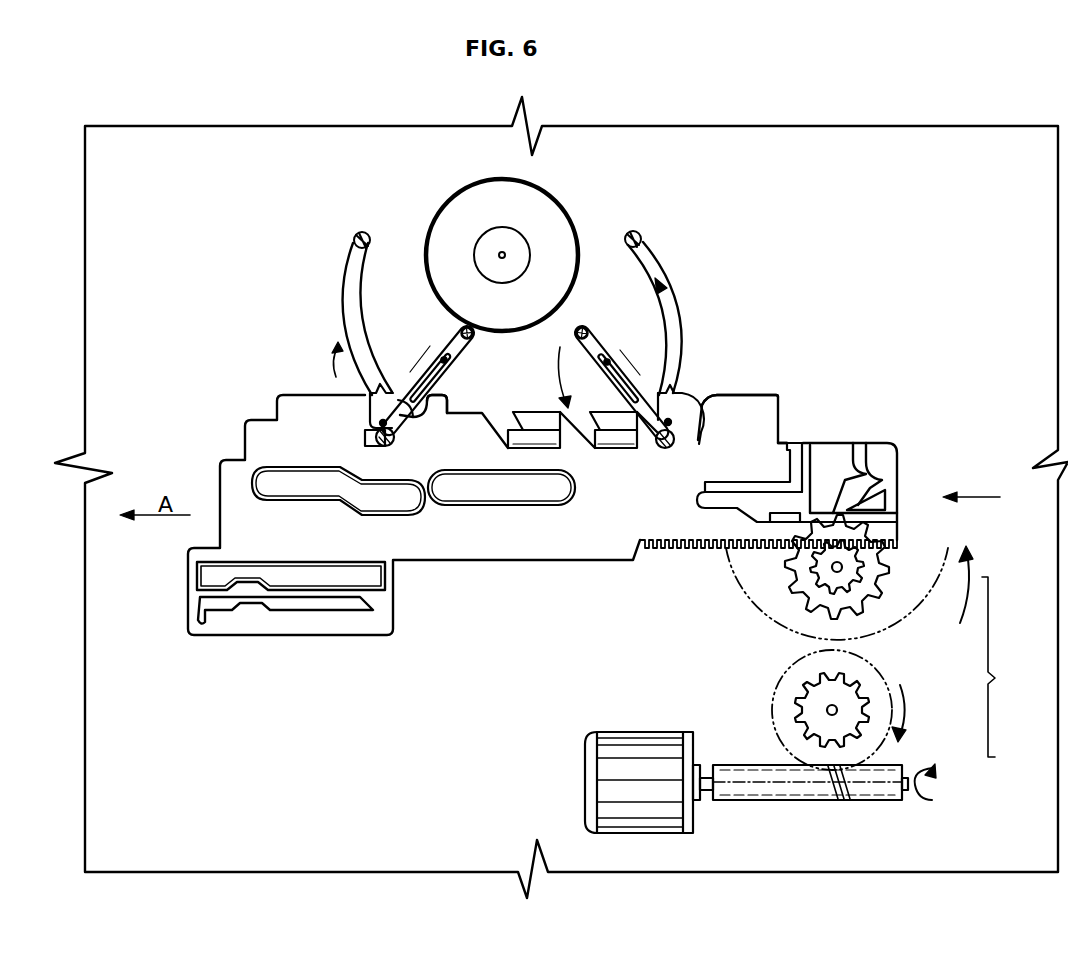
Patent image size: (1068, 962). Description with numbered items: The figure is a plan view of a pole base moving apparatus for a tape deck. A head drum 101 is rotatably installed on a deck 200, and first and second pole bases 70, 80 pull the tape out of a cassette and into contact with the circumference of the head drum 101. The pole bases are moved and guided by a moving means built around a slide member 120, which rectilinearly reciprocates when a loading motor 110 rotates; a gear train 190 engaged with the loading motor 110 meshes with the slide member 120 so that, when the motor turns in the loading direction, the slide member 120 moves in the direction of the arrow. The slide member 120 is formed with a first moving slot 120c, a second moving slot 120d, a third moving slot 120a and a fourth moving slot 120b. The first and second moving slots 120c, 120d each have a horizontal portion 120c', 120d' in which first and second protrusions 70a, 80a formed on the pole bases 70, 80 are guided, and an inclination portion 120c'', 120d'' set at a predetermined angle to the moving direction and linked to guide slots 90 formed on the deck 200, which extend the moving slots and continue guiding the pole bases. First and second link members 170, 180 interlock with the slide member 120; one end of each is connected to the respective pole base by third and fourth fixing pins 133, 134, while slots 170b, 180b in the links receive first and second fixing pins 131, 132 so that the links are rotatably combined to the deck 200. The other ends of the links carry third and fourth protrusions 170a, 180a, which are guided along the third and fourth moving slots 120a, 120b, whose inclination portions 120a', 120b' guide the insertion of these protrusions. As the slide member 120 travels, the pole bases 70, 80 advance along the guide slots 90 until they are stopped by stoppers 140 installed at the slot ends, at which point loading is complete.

The deck 200 is at (225, 148).
The head drum 101 is at (540, 212).
The guide slots 90 is at (352, 262).
The stoppers 140 is at (359, 232).
The first link member 170 is at (450, 380).
The third protrusion 170a is at (428, 270).
The slot of first link member 170b is at (395, 345).
The first fixing pin 131 is at (477, 347).
The third fixing pin 133 is at (378, 423).
The second link member 180 is at (638, 378).
The fourth protrusion 180a is at (585, 330).
The slot of second link member 180b is at (625, 367).
The second fixing pin 132 is at (612, 372).
The fourth fixing pin 134 is at (666, 428).
The first pole base 70 is at (373, 393).
The first protrusion 70a is at (365, 440).
The second pole base 80 is at (697, 400).
The second protrusion 80a is at (702, 450).
The slide member 120 is at (868, 452).
The third moving slot 120a is at (524, 406).
The inclination portion of third moving slot 120a' is at (524, 514).
The fourth moving slot 120b is at (626, 462).
The inclination portion of fourth moving slot 120b' is at (591, 490).
The first moving slot 120c is at (459, 431).
The horizontal portion of first moving slot 120c' is at (338, 497).
The inclination portion of first moving slot 120c'' is at (501, 512).
The second moving slot 120d is at (776, 391).
The inclination portion of second moving slot 120d'' is at (784, 424).
The horizontal portion of second moving slot 120d' is at (776, 501).
The loading motor 110 is at (612, 732).
The gear train 190 is at (884, 642).